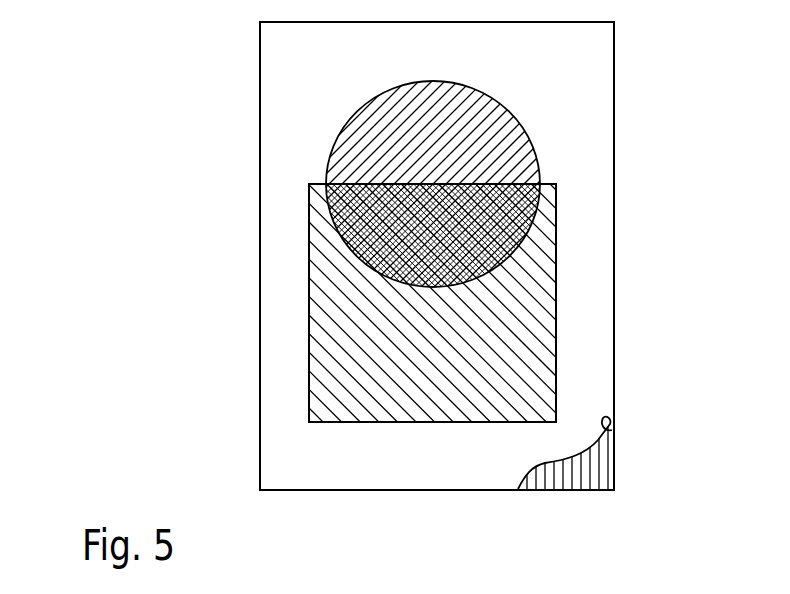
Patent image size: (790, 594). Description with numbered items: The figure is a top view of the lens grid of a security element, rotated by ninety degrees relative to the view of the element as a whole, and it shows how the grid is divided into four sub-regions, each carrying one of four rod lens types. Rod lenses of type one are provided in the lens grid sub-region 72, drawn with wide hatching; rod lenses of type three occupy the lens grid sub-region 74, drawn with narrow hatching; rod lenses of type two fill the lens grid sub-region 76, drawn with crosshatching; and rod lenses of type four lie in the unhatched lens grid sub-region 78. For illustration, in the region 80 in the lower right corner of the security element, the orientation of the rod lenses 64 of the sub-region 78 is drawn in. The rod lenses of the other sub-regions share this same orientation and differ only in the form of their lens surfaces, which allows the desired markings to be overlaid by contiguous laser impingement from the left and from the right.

The rod lenses 64 is at (594, 478).
The lens grid sub-region 72 is at (322, 336).
The lens grid sub-region 74 is at (345, 159).
The lens grid sub-region 76 is at (347, 231).
The lens grid sub-region 78 is at (277, 456).
The region 80 is at (614, 414).